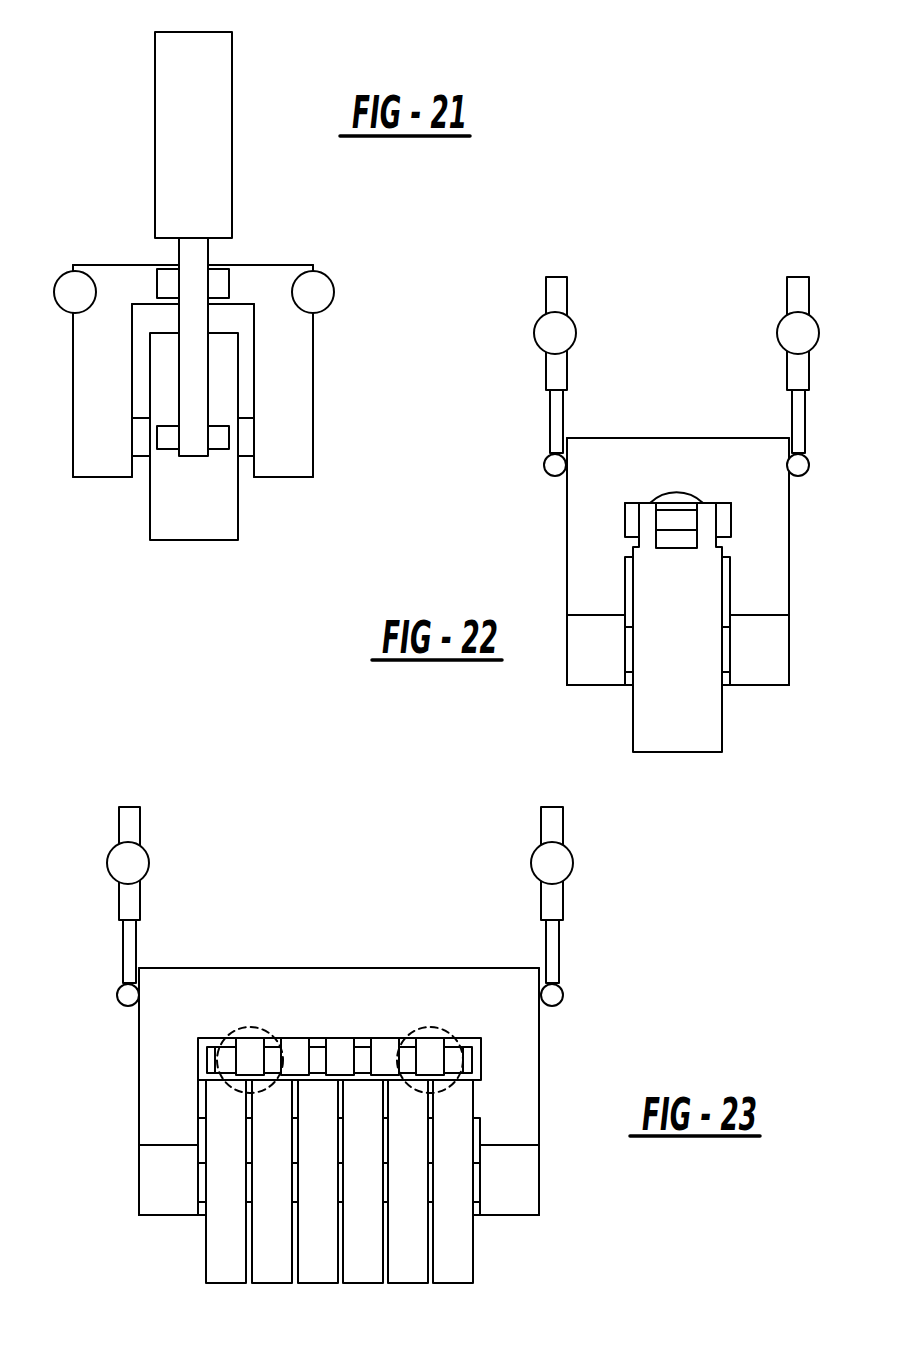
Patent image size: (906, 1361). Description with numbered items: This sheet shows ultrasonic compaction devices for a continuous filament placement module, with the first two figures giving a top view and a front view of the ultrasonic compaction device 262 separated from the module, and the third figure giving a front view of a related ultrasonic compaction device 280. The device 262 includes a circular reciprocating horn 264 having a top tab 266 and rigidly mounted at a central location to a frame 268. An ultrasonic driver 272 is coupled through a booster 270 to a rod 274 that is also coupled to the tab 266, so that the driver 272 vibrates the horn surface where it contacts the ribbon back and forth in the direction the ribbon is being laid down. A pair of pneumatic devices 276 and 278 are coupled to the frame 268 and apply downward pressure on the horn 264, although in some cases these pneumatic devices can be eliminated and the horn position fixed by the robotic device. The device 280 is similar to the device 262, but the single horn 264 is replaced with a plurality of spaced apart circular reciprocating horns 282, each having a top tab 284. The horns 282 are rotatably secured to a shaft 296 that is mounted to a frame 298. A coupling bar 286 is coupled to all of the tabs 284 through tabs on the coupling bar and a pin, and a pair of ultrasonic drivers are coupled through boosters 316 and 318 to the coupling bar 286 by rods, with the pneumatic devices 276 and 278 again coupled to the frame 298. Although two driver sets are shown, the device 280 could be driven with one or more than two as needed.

In FIG. 21, the ultrasonic compaction device 262 is at (103, 115).
In FIG. 22, the ultrasonic compaction device 262 is at (638, 247).
In FIG. 21, the circular reciprocating horn 264 is at (202, 525).
In FIG. 22, the circular reciprocating horn 264 is at (697, 722).
In FIG. 21, the top tab 266 is at (218, 443).
In FIG. 22, the top tab 266 is at (650, 523).
In FIG. 21, the frame 268 is at (297, 347).
In FIG. 22, the frame 268 is at (765, 543).
In FIG. 21, the booster 270 is at (165, 284).
In FIG. 21, the ultrasonic driver 272 is at (215, 82).
In FIG. 22, the ultrasonic driver 272 is at (675, 500).
In FIG. 21, the rod 274 is at (195, 376).
In FIG. 21, the pneumatic device 276 is at (70, 285).
In FIG. 22, the pneumatic device 276 is at (555, 365).
In FIG. 23, the pneumatic device 276 is at (128, 864).
In FIG. 21, the pneumatic device 278 is at (320, 285).
In FIG. 22, the pneumatic device 278 is at (798, 285).
In FIG. 23, the pneumatic device 278 is at (552, 863).
In FIG. 23, the ultrasonic compaction device 280 is at (340, 813).
In FIG. 23, the circular reciprocating horns 282 is at (460, 1256).
In FIG. 23, the top tab 284 is at (452, 1048).
In FIG. 23, the coupling bar 286 is at (207, 1062).
In FIG. 23, the shaft 296 is at (473, 1187).
In FIG. 23, the frame 298 is at (510, 1072).
In FIG. 23, the booster 316 is at (237, 1028).
In FIG. 23, the booster 318 is at (413, 1028).